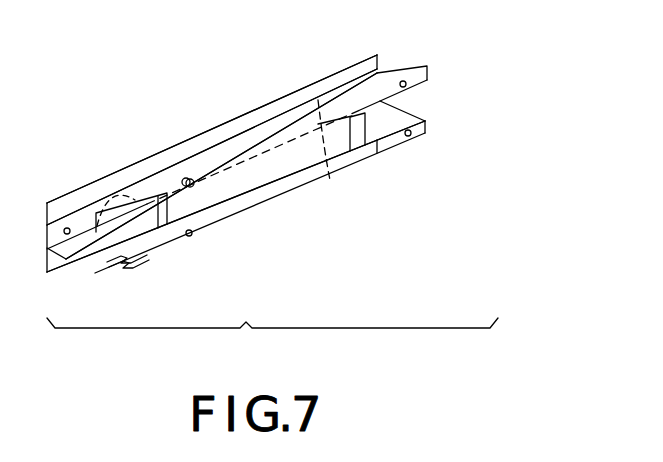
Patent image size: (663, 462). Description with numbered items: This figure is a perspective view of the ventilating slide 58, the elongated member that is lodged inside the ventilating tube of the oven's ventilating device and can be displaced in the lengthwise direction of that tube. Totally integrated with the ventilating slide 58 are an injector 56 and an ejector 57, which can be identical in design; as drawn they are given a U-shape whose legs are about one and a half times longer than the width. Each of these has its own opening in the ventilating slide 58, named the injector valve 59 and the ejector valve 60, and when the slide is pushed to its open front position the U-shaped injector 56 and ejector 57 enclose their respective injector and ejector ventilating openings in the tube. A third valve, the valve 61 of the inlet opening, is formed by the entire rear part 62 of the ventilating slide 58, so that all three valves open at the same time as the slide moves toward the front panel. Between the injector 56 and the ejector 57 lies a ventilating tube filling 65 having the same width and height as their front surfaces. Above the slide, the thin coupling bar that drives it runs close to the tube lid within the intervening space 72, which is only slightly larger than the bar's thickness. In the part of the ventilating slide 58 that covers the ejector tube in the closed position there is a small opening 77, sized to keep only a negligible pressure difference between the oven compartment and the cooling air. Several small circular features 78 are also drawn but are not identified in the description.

The injector 56 is at (365, 127).
The ejector 57 is at (157, 228).
The ventilating slide 58 is at (272, 208).
The injector valve 59 is at (330, 180).
The ejector valve 60 is at (103, 200).
The valve of the inlet opening 61 is at (379, 57).
The rear part 62 is at (427, 67).
The ventilating tube filling 65 is at (270, 176).
The intervening space 72 is at (130, 266).
The small opening 77 is at (67, 236).
The hole 78 is at (406, 86).